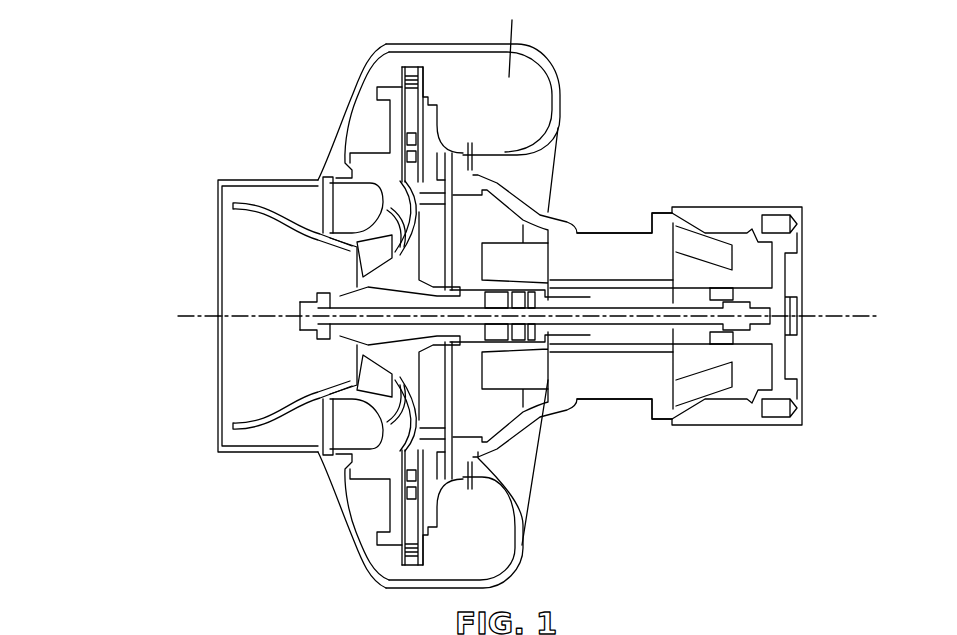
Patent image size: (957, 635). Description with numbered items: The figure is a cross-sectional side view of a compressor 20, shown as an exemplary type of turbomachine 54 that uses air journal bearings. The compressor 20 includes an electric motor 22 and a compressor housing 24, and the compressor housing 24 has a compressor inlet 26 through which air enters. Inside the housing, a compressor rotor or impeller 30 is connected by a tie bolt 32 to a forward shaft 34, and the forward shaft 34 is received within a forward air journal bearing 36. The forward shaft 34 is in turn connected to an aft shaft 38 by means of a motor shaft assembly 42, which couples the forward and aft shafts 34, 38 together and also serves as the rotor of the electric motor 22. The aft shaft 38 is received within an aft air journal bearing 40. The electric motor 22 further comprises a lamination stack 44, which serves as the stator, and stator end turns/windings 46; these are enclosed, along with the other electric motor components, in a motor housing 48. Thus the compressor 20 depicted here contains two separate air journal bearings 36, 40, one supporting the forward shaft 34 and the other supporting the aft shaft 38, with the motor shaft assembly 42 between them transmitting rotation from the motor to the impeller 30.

The compressor 20 is at (160, 162).
The turbomachine 54 is at (160, 162).
The electric motor 22 is at (774, 260).
The compressor housing 24 is at (352, 105).
The compressor inlet 26 is at (200, 419).
The impeller 30 is at (318, 331).
The tie bolt 32 is at (300, 302).
The forward shaft 34 is at (537, 355).
The forward air journal bearing 36 is at (457, 333).
The aft shaft 38 is at (733, 297).
The aft air journal bearing 40 is at (749, 355).
The motor shaft assembly 42 is at (627, 283).
The lamination stack 44 is at (612, 372).
The stator end turns/windings 46 is at (722, 257).
The motor housing 48 is at (678, 210).